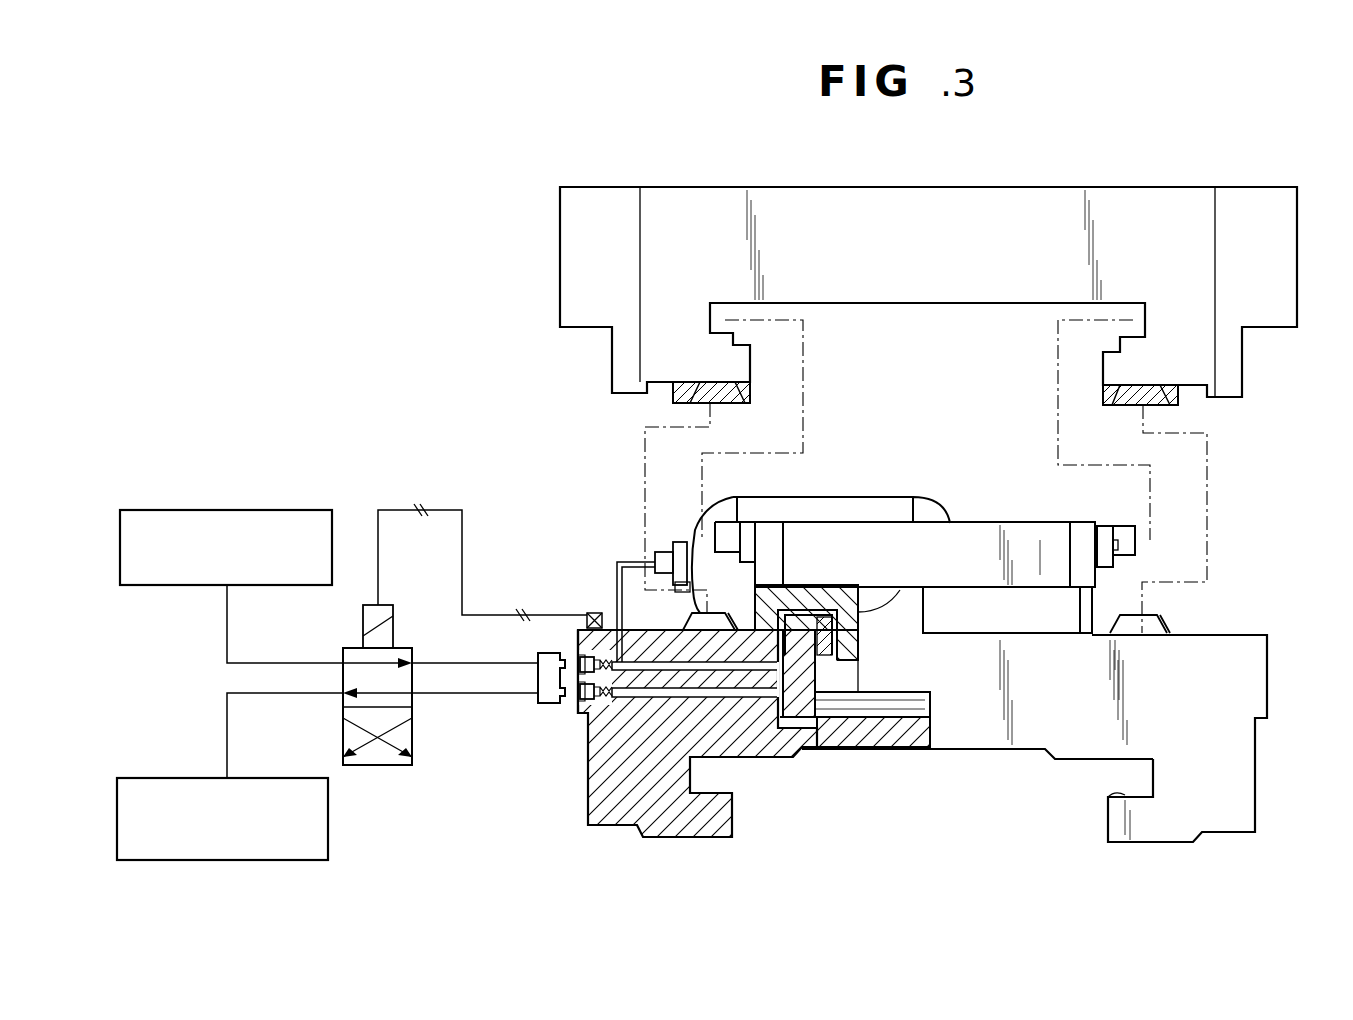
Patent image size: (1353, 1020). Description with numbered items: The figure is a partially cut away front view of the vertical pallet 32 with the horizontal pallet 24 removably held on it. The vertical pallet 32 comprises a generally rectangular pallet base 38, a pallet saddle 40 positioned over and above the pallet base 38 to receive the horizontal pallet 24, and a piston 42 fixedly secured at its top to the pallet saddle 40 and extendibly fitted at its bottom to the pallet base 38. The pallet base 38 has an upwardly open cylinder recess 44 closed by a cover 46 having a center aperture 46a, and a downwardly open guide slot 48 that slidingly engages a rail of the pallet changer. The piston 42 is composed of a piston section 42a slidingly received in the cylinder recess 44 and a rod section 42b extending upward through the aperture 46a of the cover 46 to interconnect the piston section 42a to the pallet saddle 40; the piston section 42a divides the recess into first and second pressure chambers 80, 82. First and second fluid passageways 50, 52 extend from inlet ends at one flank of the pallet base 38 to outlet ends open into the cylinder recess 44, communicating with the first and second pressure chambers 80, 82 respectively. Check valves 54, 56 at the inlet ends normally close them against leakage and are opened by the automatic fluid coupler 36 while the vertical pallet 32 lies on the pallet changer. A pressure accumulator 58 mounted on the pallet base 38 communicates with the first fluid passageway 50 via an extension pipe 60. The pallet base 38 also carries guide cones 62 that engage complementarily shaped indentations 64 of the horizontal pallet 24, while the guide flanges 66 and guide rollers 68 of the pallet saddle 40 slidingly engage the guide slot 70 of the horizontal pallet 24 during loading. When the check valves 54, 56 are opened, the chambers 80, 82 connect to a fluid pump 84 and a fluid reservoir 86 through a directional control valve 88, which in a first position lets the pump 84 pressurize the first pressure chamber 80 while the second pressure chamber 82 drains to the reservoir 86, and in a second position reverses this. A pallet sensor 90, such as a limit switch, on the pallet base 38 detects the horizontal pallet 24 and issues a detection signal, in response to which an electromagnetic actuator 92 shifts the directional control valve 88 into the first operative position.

The horizontal pallet 24 is at (923, 187).
The guide slot 70 is at (743, 343).
The indentations 64 is at (728, 404).
The pressure accumulator 58 is at (827, 508).
The pallet saddle 40 is at (1028, 540).
The guide rollers 68 is at (1113, 527).
The guide flanges 66 is at (1130, 535).
The vertical pallet 32 is at (1218, 568).
The cover 46 is at (858, 615).
The center aperture 46a is at (923, 650).
The piston 42 is at (932, 820).
The piston section 42a is at (925, 752).
The rod section 42b is at (980, 752).
The pallet base 38 is at (1258, 670).
The guide slot 48 is at (1115, 792).
The guide cones 62 is at (692, 607).
The extension pipe 60 is at (628, 560).
The pallet sensor 90 is at (590, 612).
The second fluid passageway 52 is at (663, 690).
The first fluid passageway 50 is at (640, 690).
The first pressure chamber 80 is at (880, 752).
The cylinder recess 44 is at (828, 752).
The second pressure chamber 82 is at (857, 752).
The fluid coupler 36 is at (546, 704).
The check valve 54 is at (578, 630).
The check valve 56 is at (584, 705).
The fluid pump 84 is at (296, 510).
The fluid reservoir 86 is at (296, 860).
The directional control valve 88 is at (388, 765).
The electromagnetic actuator 92 is at (393, 608).